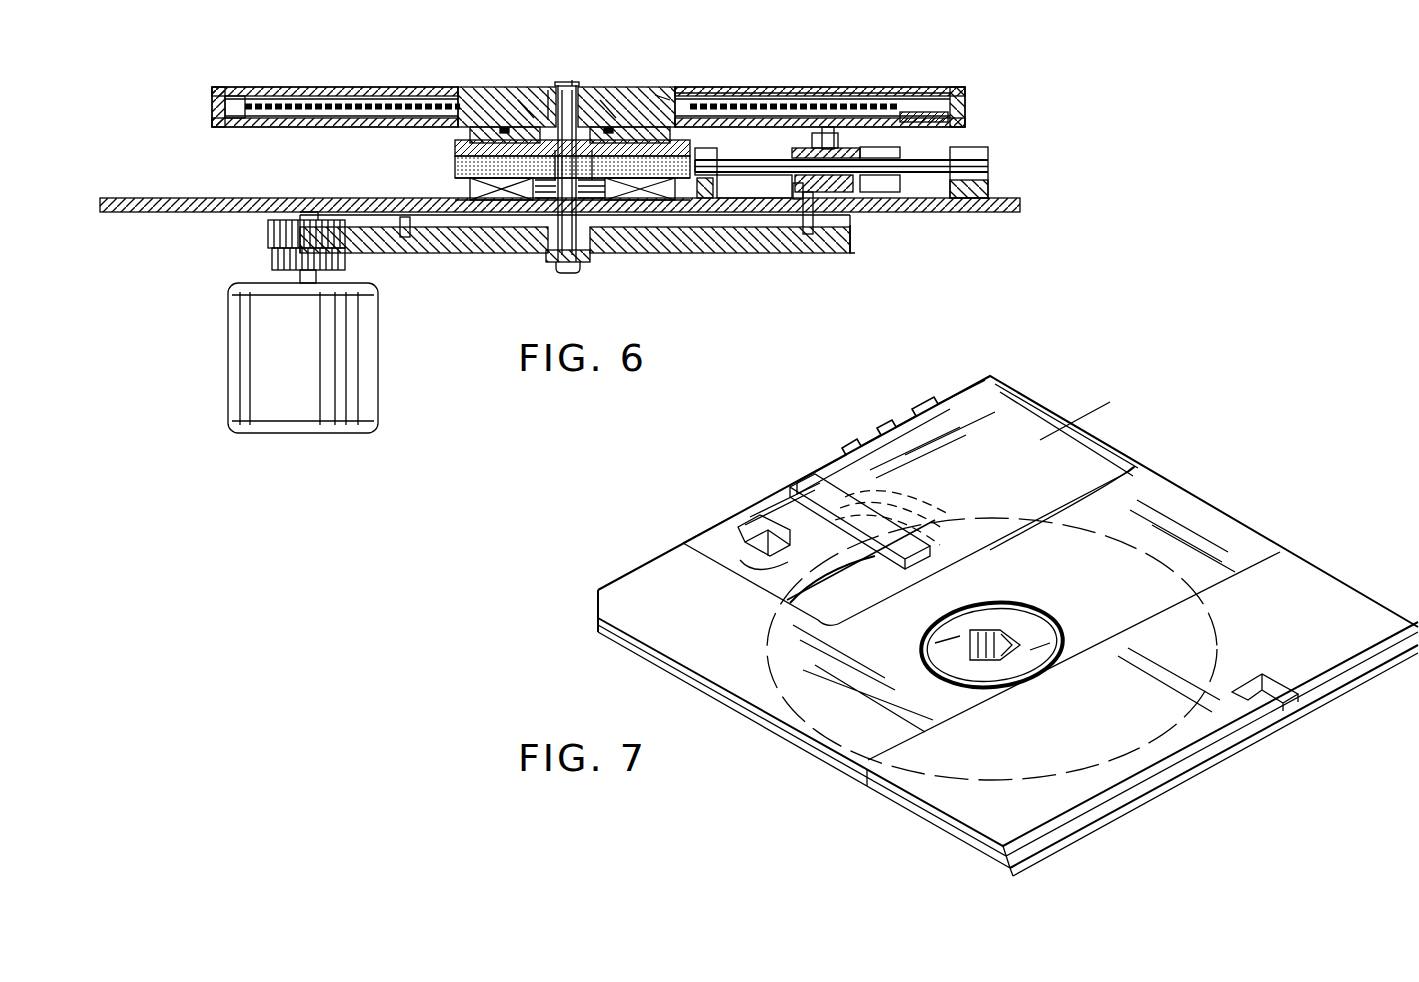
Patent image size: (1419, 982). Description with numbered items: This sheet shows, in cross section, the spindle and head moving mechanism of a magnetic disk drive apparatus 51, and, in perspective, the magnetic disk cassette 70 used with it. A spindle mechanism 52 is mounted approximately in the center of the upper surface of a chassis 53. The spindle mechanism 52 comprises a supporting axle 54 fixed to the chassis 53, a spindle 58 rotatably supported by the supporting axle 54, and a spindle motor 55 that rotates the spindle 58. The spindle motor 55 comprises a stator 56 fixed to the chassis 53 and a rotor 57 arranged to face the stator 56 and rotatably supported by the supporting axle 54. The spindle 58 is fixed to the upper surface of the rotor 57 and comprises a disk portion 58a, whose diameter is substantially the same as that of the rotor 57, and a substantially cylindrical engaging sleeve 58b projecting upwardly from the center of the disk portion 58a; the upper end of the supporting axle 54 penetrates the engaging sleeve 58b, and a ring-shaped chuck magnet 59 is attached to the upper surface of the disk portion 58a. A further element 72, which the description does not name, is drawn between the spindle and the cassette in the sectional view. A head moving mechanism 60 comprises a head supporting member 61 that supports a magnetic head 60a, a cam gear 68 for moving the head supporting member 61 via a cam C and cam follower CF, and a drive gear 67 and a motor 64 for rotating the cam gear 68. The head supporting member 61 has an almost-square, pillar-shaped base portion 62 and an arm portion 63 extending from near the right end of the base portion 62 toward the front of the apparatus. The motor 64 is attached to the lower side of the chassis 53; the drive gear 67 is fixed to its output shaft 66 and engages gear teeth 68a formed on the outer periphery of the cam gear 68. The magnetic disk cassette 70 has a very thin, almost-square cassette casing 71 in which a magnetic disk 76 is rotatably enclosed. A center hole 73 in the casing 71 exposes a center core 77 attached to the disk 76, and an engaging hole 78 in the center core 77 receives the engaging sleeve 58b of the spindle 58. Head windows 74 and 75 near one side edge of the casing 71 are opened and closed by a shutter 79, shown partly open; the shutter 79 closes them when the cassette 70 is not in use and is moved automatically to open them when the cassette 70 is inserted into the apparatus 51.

In FIG. 6, the magnetic disk drive apparatus 51 is at (995, 172).
In FIG. 6, the spindle mechanism 52 is at (440, 173).
In FIG. 6, the chassis 53 is at (172, 197).
In FIG. 6, the supporting axle 54 is at (576, 84).
In FIG. 6, the spindle motor 55 is at (480, 330).
In FIG. 6, the stator 56 is at (500, 200).
In FIG. 6, the rotor 57 is at (470, 190).
In FIG. 6, the spindle 58 is at (496, 104).
In FIG. 6, the disk portion 58a is at (518, 100).
In FIG. 6, the engaging sleeve 58b is at (600, 100).
In FIG. 6, the chuck magnet 59 is at (660, 96).
In FIG. 6, the head moving mechanism 60 is at (958, 186).
In FIG. 6, the magnetic head 60a is at (828, 128).
In FIG. 6, the head supporting member 61 is at (745, 155).
In FIG. 6, the base portion 62 is at (760, 186).
In FIG. 6, the arm portion 63 is at (846, 186).
In FIG. 6, the motor 64 is at (240, 368).
In FIG. 6, the output shaft 66 is at (304, 283).
In FIG. 6, the drive gear 67 is at (268, 244).
In FIG. 6, the cam gear 68 is at (516, 253).
In FIG. 6, the gear teeth 68a is at (272, 260).
In FIG. 6, the magnetic disk cassette 70 is at (232, 88).
In FIG. 7, the magnetic disk cassette 70 is at (1112, 415).
In FIG. 6, the cassette casing 71 is at (225, 92).
In FIG. 7, the cassette casing 71 is at (1170, 500).
In FIG. 6, the hub 72 is at (455, 131).
In FIG. 6, the center hole 73 is at (466, 90).
In FIG. 7, the center hole 73 is at (1045, 645).
In FIG. 6, the head window 74 is at (905, 112).
In FIG. 7, the head window 74 is at (750, 540).
In FIG. 6, the head window 75 is at (915, 91).
In FIG. 7, the head window 75 is at (810, 533).
In FIG. 6, the magnetic disk 76 is at (333, 104).
In FIG. 7, the magnetic disk 76 is at (808, 604).
In FIG. 6, the center core 77 is at (548, 90).
In FIG. 7, the center core 77 is at (1002, 628).
In FIG. 6, the engaging hole 78 is at (572, 82).
In FIG. 7, the engaging hole 78 is at (975, 656).
In FIG. 7, the shutter 79 is at (975, 445).
In FIG. 6, the cam C is at (405, 240).
In FIG. 6, the cam follower CF is at (808, 236).